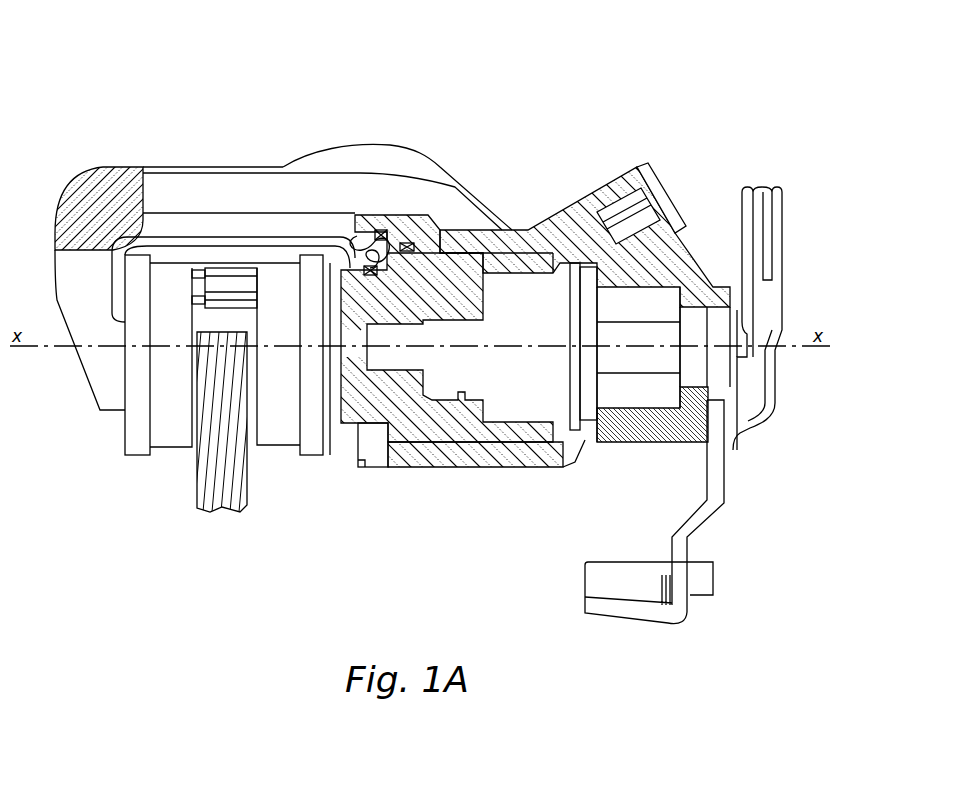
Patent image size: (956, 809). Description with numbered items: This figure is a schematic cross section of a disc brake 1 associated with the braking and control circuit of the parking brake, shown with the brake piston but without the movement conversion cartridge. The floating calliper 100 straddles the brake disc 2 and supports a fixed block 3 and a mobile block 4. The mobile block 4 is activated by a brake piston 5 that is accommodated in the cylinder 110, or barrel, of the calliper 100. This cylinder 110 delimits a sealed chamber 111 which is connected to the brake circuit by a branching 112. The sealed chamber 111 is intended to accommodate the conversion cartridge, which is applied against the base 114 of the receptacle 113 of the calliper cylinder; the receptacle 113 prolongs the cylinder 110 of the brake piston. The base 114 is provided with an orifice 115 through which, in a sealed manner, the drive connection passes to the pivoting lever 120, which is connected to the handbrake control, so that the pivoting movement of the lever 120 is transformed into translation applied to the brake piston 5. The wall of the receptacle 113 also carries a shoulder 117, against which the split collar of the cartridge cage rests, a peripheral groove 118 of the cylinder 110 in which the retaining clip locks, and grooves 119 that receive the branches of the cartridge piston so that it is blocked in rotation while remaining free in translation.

The disc brake 1 is at (624, 78).
The floating calliper 100 is at (215, 158).
The brake disc 2 is at (230, 505).
The fixed block 3 is at (173, 437).
The mobile block 4 is at (278, 437).
The brake piston 5 is at (425, 455).
The cylinder 110 is at (482, 455).
The sealed chamber 111 is at (507, 320).
The branching 112 is at (618, 208).
The receptacle 113 is at (656, 195).
The base 114 is at (661, 394).
The orifice 115 is at (748, 250).
The shoulder 117 is at (603, 440).
The peripheral groove 118 is at (584, 432).
The grooves 119 is at (652, 363).
The pivoting lever 120 is at (727, 482).